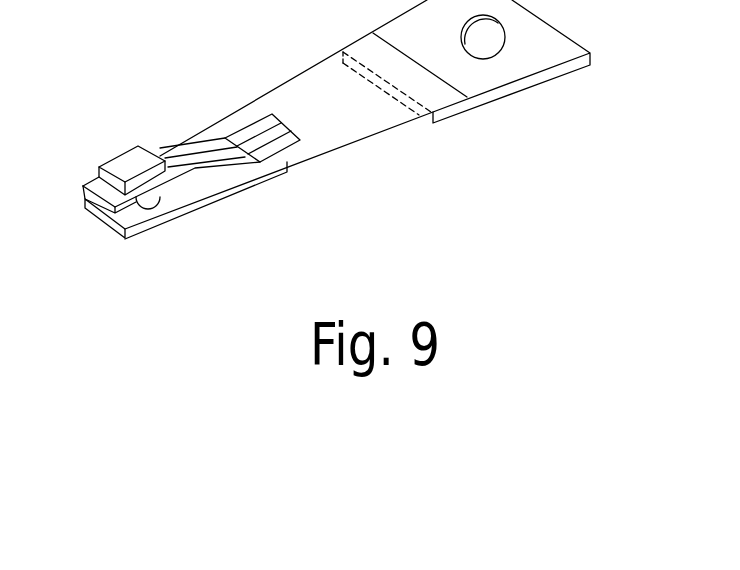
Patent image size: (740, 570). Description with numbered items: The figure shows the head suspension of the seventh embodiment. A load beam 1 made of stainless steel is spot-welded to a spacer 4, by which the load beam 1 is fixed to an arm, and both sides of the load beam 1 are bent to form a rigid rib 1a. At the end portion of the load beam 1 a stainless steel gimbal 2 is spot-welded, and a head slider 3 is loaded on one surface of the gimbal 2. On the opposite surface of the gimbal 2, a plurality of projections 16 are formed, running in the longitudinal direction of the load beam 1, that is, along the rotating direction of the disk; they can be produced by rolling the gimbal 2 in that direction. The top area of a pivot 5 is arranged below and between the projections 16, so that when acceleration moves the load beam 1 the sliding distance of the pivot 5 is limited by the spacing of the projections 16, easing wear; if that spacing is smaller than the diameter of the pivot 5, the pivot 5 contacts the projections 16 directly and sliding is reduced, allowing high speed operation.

The load beam 1 is at (368, 138).
The rigid rib 1a is at (284, 176).
The gimbal 2 is at (190, 168).
The head slider 3 is at (124, 152).
The spacer 4 is at (563, 66).
The pivot 5 is at (150, 205).
The projections 16 is at (205, 145).